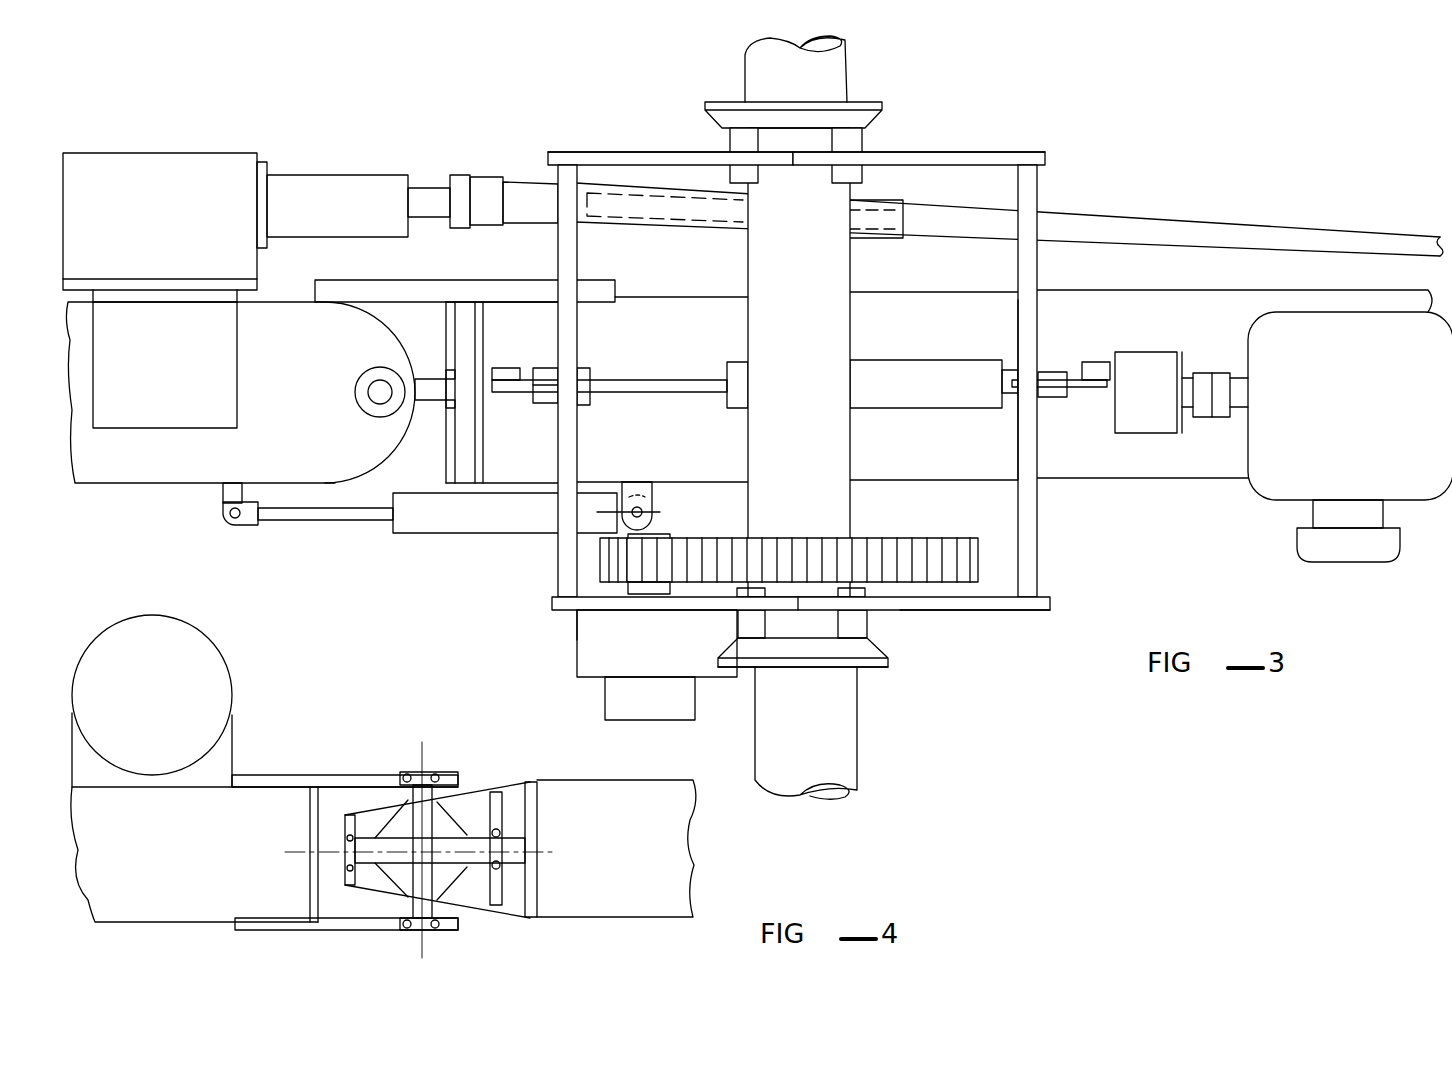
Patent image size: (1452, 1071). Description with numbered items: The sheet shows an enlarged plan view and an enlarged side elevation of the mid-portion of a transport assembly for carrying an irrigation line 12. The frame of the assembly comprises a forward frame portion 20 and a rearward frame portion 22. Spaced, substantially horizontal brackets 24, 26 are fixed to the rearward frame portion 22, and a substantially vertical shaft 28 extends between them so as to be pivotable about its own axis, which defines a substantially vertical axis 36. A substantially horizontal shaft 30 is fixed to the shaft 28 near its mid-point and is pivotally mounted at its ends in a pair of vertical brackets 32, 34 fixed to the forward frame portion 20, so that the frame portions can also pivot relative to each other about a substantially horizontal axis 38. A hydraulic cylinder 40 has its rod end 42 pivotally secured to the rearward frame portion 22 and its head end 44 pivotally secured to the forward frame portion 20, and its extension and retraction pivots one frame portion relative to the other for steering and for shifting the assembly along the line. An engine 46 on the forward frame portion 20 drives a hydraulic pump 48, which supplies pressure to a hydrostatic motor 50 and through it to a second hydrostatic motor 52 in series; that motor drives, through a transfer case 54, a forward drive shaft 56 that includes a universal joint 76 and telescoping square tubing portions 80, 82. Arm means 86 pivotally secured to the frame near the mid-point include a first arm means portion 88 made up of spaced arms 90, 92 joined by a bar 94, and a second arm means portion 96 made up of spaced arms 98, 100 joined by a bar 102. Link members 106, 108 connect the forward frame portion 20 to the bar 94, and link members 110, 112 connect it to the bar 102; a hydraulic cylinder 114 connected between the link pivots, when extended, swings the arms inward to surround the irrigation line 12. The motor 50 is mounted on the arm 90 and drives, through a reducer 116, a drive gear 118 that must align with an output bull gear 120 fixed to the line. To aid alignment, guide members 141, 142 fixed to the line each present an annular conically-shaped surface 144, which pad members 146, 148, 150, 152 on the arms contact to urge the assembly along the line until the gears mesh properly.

In FIG. 3, the irrigation line 12 is at (778, 424).
In FIG. 3, the forward frame portion 20 is at (636, 451).
In FIG. 4, the forward frame portion 20 is at (591, 869).
In FIG. 3, the rearward frame portion 22 is at (266, 366).
In FIG. 4, the rearward frame portion 22 is at (265, 776).
In FIG. 3, the bracket 24 is at (371, 445).
In FIG. 4, the bracket 24 is at (360, 774).
In FIG. 4, the bracket 26 is at (330, 932).
In FIG. 3, the vertical shaft 28 is at (380, 393).
In FIG. 4, the vertical shaft 28 is at (445, 931).
In FIG. 3, the horizontal shaft 30 is at (437, 372).
In FIG. 4, the horizontal shaft 30 is at (465, 830).
In FIG. 4, the vertical bracket 32 is at (355, 884).
In FIG. 4, the vertical bracket 34 is at (500, 908).
In FIG. 4, the vertical axis 36 is at (424, 758).
In FIG. 4, the horizontal axis 38 is at (512, 848).
In FIG. 3, the hydraulic cylinder 40 is at (455, 534).
In FIG. 3, the rod end 42 is at (251, 527).
In FIG. 3, the head end 44 is at (652, 512).
In FIG. 3, the engine 46 is at (1326, 417).
In FIG. 3, the hydraulic pump 48 is at (1134, 417).
In FIG. 3, the hydrostatic motor 50 is at (635, 719).
In FIG. 3, the hydrostatic motor 52 is at (126, 366).
In FIG. 4, the hydrostatic motor 52 is at (203, 676).
In FIG. 3, the transfer case 54 is at (120, 212).
In FIG. 3, the forward drive shaft 56 is at (1147, 213).
In FIG. 3, the universal joint 76 is at (465, 163).
In FIG. 3, the tubing portion 80 is at (893, 208).
In FIG. 3, the tubing portion 82 is at (1272, 222).
In FIG. 3, the arm means 86 is at (955, 627).
In FIG. 3, the first arm means portion 88 is at (548, 615).
In FIG. 3, the arm 90 is at (578, 613).
In FIG. 3, the arm 92 is at (627, 152).
In FIG. 3, the bar 94 is at (563, 204).
In FIG. 3, the second arm means portion 96 is at (980, 148).
In FIG. 3, the arm 98 is at (1005, 611).
In FIG. 3, the arm 100 is at (1003, 151).
In FIG. 3, the bar 102 is at (1030, 334).
In FIG. 3, the link member 106 is at (512, 393).
In FIG. 3, the link member 108 is at (548, 405).
In FIG. 3, the link member 110 is at (1080, 380).
In FIG. 3, the link member 112 is at (1017, 392).
In FIG. 3, the hydraulic cylinder 114 is at (901, 404).
In FIG. 3, the reducer 116 is at (582, 678).
In FIG. 3, the drive gear 118 is at (602, 566).
In FIG. 3, the output bull gear 120 is at (905, 548).
In FIG. 3, the guide member 141 is at (885, 670).
In FIG. 3, the guide member 142 is at (878, 102).
In FIG. 3, the conically-shaped surface 144 is at (878, 117).
In FIG. 3, the pad member 146 is at (757, 623).
In FIG. 3, the pad member 148 is at (757, 175).
In FIG. 3, the pad member 150 is at (858, 620).
In FIG. 3, the pad member 152 is at (843, 177).